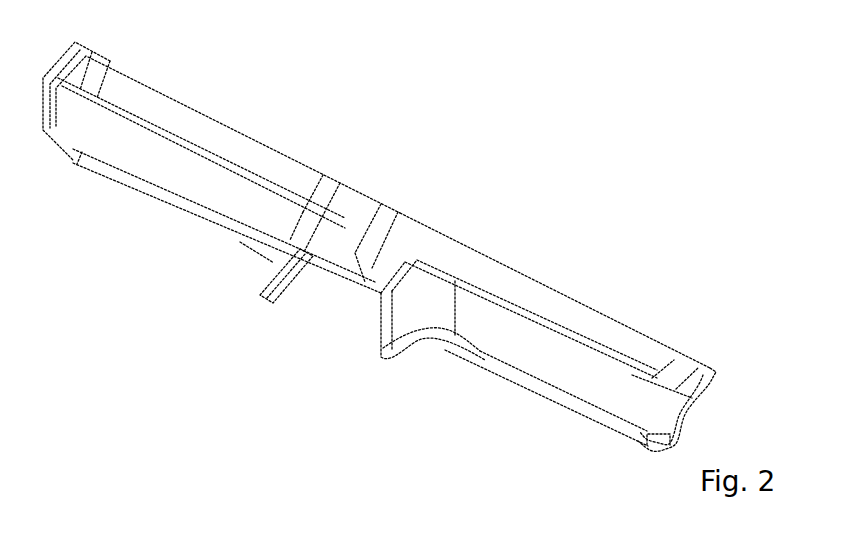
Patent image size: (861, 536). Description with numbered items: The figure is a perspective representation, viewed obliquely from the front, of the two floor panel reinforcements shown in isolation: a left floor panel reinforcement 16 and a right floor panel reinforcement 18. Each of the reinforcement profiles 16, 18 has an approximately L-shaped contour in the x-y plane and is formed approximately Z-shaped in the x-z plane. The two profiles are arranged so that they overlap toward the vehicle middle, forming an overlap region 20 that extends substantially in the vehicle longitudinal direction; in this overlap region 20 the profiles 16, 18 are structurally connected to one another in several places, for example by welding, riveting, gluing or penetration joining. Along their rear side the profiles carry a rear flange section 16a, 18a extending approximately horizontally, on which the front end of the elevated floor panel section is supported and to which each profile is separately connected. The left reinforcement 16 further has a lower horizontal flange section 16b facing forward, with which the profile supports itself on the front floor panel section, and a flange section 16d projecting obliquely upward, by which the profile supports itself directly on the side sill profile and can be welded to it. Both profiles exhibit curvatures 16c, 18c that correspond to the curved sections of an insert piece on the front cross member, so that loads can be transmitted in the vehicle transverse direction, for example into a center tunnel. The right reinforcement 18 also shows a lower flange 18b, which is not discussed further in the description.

The left floor panel reinforcement 16 is at (575, 317).
The rear flange section 16a is at (660, 347).
The lower flange section 16b is at (540, 387).
The curvature 16c is at (407, 320).
The flange section 16d is at (712, 377).
The right floor panel reinforcement 18 is at (172, 108).
The rear flange section 18a is at (247, 143).
The lower flange of first rail member 18b is at (107, 173).
The curvature 18c is at (283, 237).
The overlap region 20 is at (400, 173).